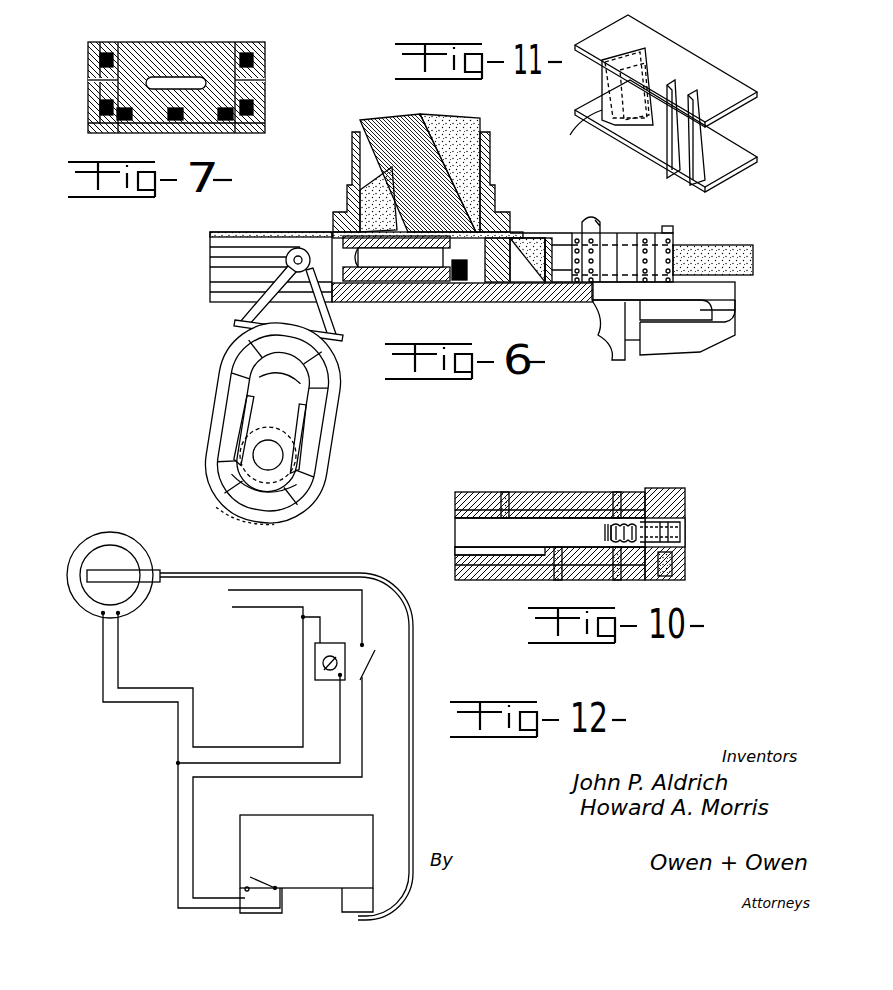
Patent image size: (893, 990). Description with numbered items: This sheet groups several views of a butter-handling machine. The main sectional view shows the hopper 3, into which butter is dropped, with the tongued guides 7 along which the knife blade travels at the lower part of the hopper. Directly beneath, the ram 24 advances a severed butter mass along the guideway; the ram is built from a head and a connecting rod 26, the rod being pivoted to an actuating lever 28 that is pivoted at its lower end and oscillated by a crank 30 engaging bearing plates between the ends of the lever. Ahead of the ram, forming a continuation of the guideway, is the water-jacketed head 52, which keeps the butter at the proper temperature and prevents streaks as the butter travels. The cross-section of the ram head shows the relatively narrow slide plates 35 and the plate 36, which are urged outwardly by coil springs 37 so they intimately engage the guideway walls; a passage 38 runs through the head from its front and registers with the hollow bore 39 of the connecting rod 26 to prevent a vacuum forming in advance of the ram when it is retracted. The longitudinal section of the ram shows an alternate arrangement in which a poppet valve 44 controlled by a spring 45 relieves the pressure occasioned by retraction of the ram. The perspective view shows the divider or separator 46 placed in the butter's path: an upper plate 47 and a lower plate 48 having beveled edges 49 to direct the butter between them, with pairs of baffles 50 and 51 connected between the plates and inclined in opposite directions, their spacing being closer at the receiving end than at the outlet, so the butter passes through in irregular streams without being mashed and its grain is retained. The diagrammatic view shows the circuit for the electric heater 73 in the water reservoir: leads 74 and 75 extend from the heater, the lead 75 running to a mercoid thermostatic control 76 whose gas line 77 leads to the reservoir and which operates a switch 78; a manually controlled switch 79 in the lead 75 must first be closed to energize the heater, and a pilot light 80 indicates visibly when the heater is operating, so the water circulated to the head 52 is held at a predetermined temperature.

In FIG. 6, the hopper 3 is at (490, 160).
In FIG. 6, the tongued guides 7 is at (448, 211).
In FIG. 7, the ram 24 is at (200, 55).
In FIG. 6, the connecting rod 26 is at (380, 268).
In FIG. 6, the actuating lever 28 is at (330, 437).
In FIG. 6, the crank 30 is at (275, 435).
In FIG. 7, the slide plates 35 is at (93, 100).
In FIG. 7, the plate 36 is at (258, 133).
In FIG. 7, the coil springs 37 is at (246, 58).
In FIG. 7, the passage 38 is at (163, 80).
In FIG. 6, the passage 38 is at (455, 282).
In FIG. 6, the hollow bore 39 is at (410, 260).
In FIG. 10, the poppet valve 44 is at (680, 532).
In FIG. 10, the spring 45 is at (630, 525).
In FIG. 11, the divider or separator 46 is at (755, 90).
In FIG. 11, the upper plate 47 is at (680, 57).
In FIG. 6, the upper plate 47 is at (540, 275).
In FIG. 11, the lower plate 48 is at (660, 140).
In FIG. 11, the beveled edges 49 is at (595, 68).
In FIG. 11, the baffles 50 is at (684, 160).
In FIG. 11, the baffles 51 is at (575, 135).
In FIG. 6, the water-jacketed head 52 is at (607, 237).
In FIG. 12, the electric heater 73 is at (135, 548).
In FIG. 12, the lead 74 is at (150, 688).
In FIG. 12, the lead 75 is at (140, 704).
In FIG. 12, the thermostatic control 76 is at (316, 823).
In FIG. 12, the gas line 77 is at (278, 578).
In FIG. 12, the switch 78 is at (265, 880).
In FIG. 12, the manually controlled switch 79 is at (370, 668).
In FIG. 12, the pilot light 80 is at (320, 672).